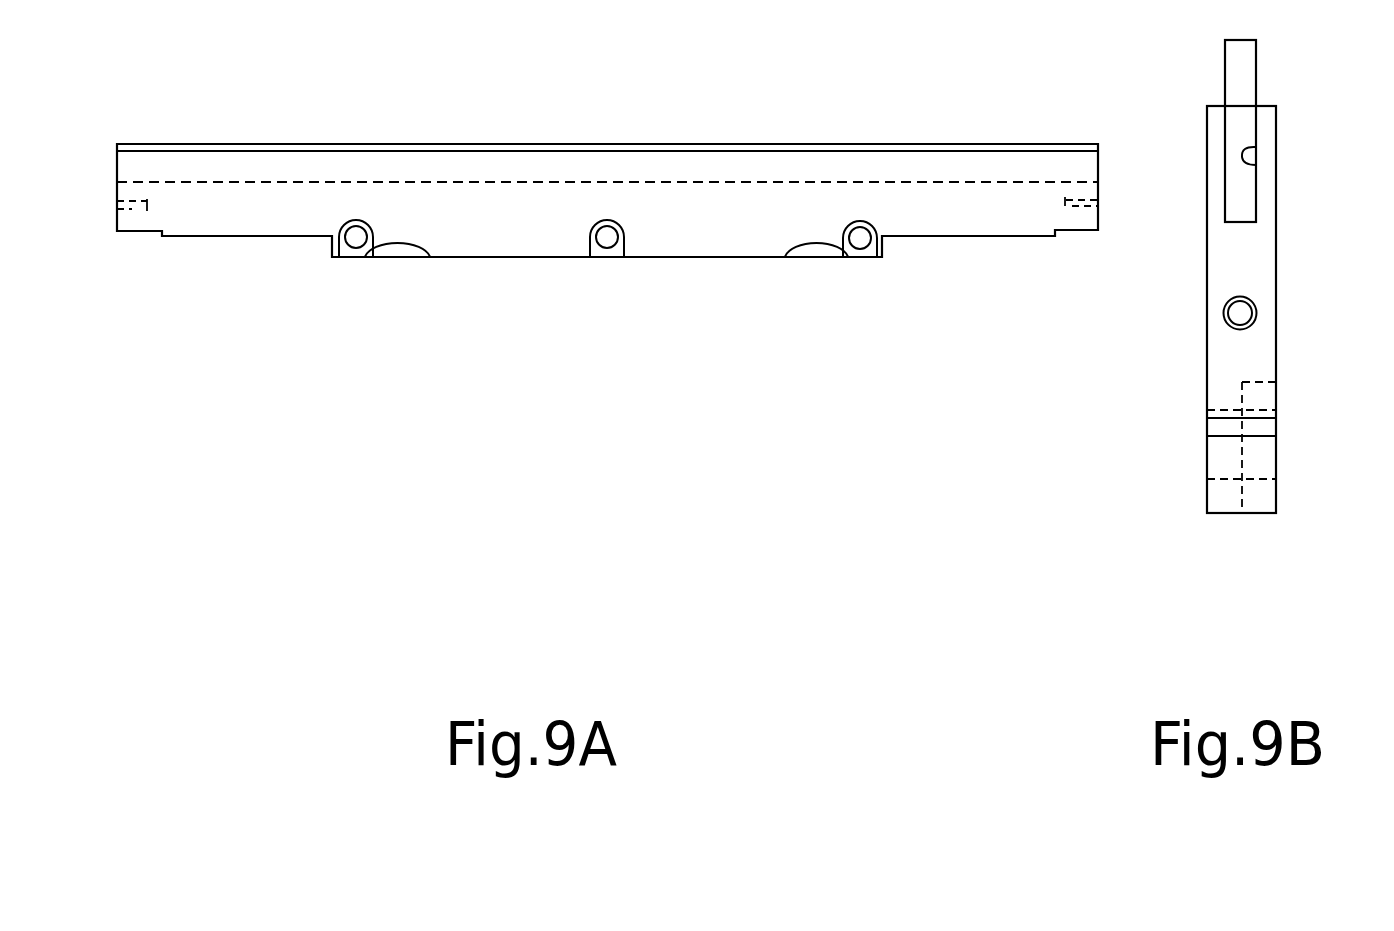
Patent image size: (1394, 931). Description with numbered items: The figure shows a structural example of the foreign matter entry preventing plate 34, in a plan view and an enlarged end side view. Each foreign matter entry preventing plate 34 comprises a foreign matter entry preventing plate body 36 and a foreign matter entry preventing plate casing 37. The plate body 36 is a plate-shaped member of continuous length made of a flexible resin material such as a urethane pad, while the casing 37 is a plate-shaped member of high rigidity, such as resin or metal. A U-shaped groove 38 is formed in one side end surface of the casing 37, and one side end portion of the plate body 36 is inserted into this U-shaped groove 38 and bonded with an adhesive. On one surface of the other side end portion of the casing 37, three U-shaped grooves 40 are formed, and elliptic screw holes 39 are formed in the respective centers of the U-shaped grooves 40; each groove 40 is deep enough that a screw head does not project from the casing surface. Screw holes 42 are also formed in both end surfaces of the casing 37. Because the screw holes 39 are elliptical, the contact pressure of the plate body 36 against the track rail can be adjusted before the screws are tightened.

In FIG. 9A, the foreign matter entry preventing plate 34 is at (626, 126).
In FIG. 9A, the foreign matter entry preventing plate body 36 is at (499, 143).
In FIG. 9B, the foreign matter entry preventing plate body 36 is at (1247, 83).
In FIG. 9A, the foreign matter entry preventing plate casing 37 is at (497, 241).
In FIG. 9B, the foreign matter entry preventing plate casing 37 is at (1265, 345).
In FIG. 9B, the U-shaped groove 38 is at (1255, 148).
In FIG. 9A, the screw hole 39 is at (362, 250).
In FIG. 9B, the screw hole 39 is at (1260, 480).
In FIG. 9A, the U-shaped groove 40 is at (356, 237).
In FIG. 9B, the U-shaped groove 40 is at (1242, 398).
In FIG. 9A, the screw hole 42 is at (134, 206).
In FIG. 9B, the screw hole 42 is at (1252, 312).